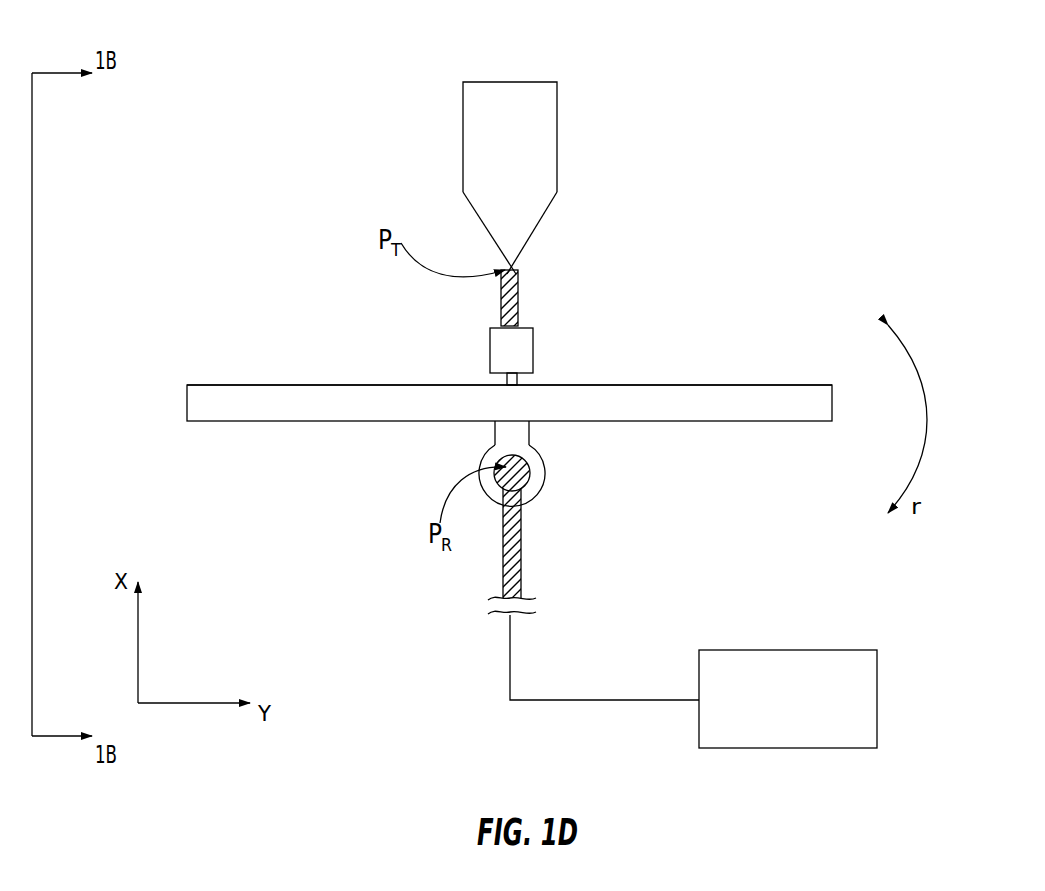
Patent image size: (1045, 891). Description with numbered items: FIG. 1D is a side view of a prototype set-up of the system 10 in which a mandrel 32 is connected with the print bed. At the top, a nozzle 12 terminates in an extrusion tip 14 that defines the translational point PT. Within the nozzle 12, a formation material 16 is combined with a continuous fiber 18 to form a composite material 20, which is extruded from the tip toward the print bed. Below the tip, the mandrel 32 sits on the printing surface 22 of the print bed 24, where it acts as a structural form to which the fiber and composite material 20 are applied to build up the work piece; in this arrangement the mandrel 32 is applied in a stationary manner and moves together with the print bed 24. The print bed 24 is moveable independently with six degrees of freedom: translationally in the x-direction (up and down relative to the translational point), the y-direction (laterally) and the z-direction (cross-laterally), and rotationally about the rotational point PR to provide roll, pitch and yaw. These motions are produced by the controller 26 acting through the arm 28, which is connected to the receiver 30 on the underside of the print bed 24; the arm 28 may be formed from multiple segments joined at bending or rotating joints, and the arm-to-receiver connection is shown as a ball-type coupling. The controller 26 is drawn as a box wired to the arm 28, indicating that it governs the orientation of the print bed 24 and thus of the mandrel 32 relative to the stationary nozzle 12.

The system 10 is at (851, 89).
The nozzle 12 is at (538, 109).
The extrusion tip 14 is at (518, 268).
The formation material 16 is at (514, 298).
The continuous fiber 18 is at (513, 318).
The composite material 20 is at (478, 312).
The printing surface 22 is at (656, 382).
The print bed 24 is at (773, 405).
The controller 26 is at (801, 714).
The arm 28 is at (522, 535).
The receiver 30 is at (530, 463).
The mandrel 32 is at (533, 348).